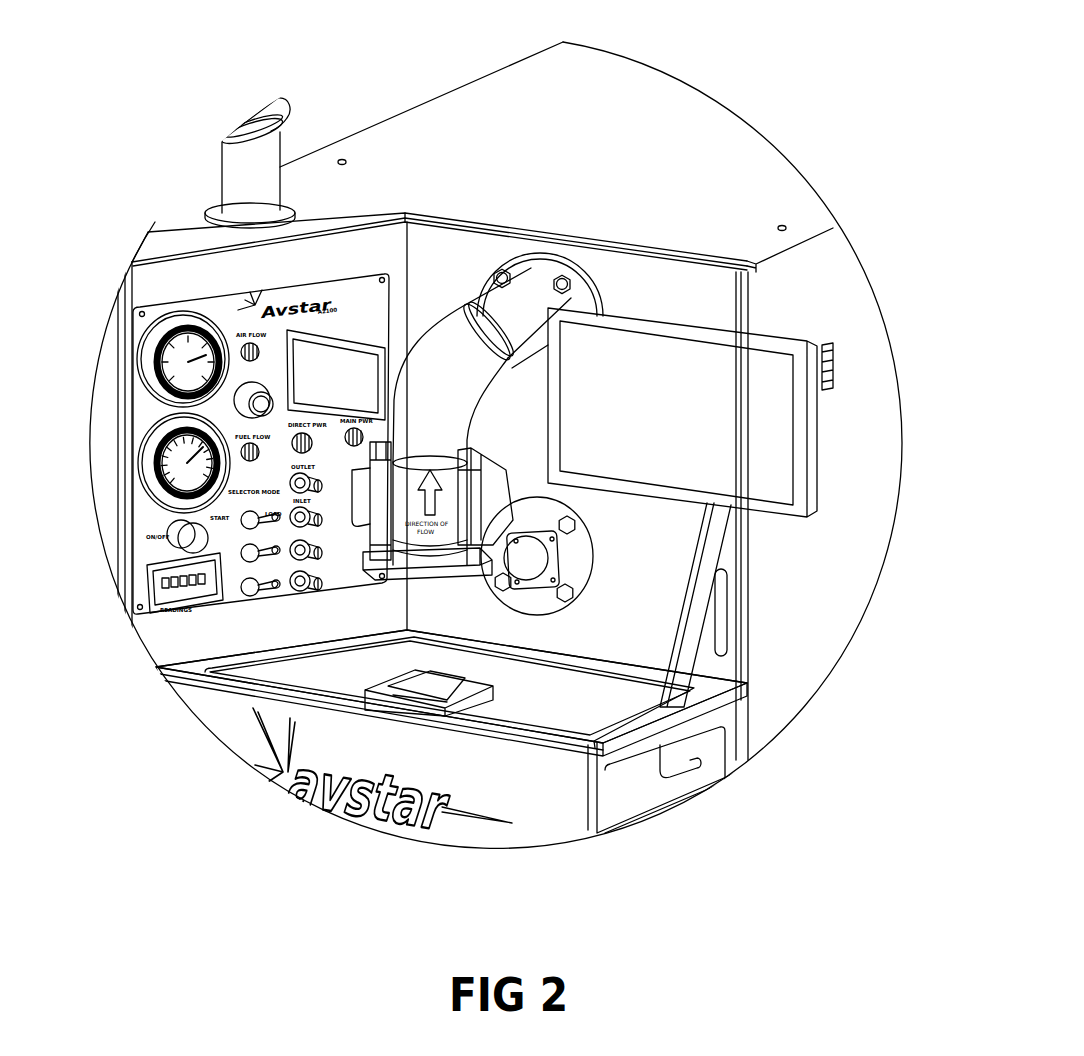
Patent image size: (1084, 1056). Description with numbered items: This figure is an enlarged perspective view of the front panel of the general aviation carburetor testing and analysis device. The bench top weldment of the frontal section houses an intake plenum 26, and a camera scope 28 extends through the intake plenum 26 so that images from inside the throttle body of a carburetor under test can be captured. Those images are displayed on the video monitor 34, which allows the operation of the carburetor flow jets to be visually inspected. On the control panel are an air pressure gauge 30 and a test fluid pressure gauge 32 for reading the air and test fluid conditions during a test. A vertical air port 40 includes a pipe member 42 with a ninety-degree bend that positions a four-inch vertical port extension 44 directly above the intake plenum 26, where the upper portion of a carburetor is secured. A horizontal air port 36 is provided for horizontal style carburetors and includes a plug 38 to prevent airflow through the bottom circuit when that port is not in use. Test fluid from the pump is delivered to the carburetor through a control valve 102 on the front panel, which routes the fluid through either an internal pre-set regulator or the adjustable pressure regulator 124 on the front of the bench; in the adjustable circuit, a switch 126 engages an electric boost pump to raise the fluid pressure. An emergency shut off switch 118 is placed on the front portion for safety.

The intake plenum 26 is at (400, 690).
The camera scope 28 is at (430, 690).
The air pressure gauge 30 is at (155, 333).
The test fluid pressure gauge 32 is at (158, 418).
The video monitor 34 is at (349, 334).
The horizontal air port 36 is at (560, 558).
The plug 38 is at (560, 573).
The vertical air port 40 is at (540, 277).
The pipe member 42 is at (447, 377).
The vertical port extension 44 is at (548, 484).
The control valve 102 is at (185, 512).
The emergency shut off switch 118 is at (244, 383).
The adjustable pressure regulator 124 is at (168, 546).
The switch 126 is at (301, 432).